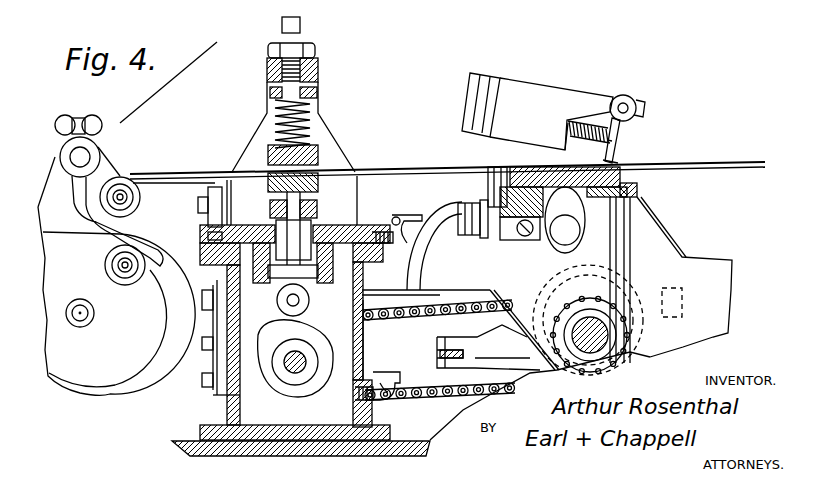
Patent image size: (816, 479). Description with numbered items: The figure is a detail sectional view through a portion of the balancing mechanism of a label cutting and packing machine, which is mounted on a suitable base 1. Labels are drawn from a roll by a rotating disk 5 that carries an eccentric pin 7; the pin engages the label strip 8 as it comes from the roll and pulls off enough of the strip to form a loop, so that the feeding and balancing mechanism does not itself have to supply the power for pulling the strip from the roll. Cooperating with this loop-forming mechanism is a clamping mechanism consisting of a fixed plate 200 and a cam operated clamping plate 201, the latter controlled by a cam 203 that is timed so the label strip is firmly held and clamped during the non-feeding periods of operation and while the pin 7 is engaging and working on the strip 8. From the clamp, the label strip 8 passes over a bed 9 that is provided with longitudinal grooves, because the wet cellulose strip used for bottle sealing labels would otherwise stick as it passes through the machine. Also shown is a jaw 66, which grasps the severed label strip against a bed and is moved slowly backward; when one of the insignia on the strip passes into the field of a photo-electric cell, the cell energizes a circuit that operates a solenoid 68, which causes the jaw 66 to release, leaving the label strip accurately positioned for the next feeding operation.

The base 1 is at (200, 446).
The rotating disk 5 is at (103, 390).
The eccentric pin 7 is at (122, 286).
The label strip 8 is at (160, 173).
The bed 9 is at (630, 176).
The jaw 66 is at (612, 158).
The solenoid 68 is at (510, 98).
The fixed plate 200 is at (318, 183).
The cam operated clamping plate 201 is at (318, 153).
The cam 203 is at (272, 340).